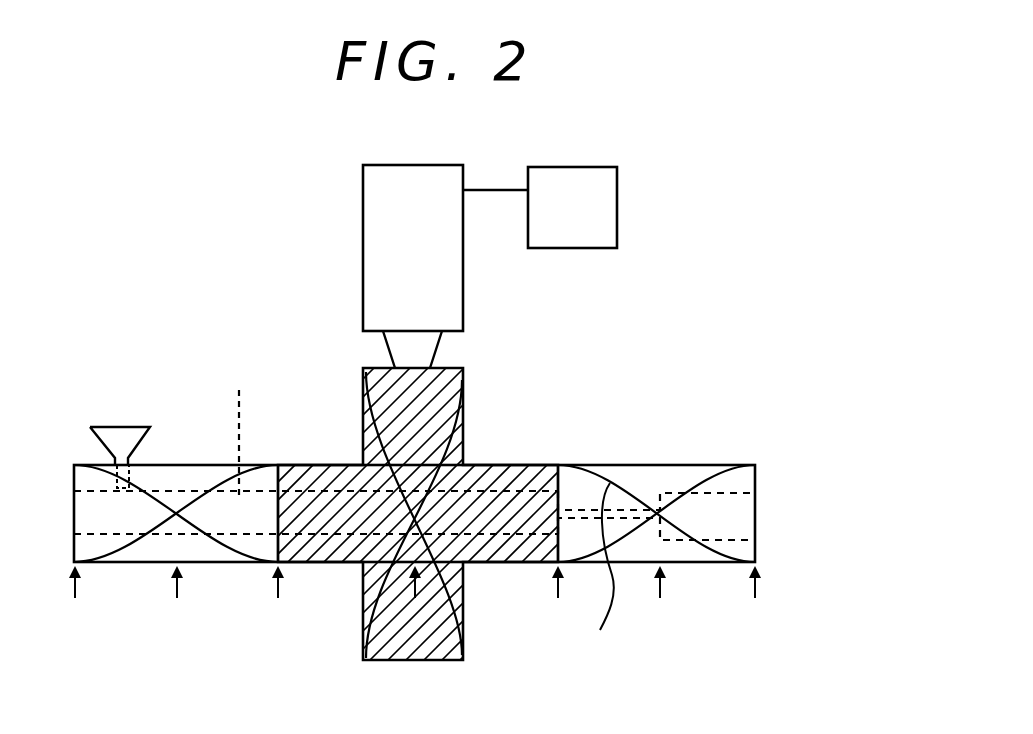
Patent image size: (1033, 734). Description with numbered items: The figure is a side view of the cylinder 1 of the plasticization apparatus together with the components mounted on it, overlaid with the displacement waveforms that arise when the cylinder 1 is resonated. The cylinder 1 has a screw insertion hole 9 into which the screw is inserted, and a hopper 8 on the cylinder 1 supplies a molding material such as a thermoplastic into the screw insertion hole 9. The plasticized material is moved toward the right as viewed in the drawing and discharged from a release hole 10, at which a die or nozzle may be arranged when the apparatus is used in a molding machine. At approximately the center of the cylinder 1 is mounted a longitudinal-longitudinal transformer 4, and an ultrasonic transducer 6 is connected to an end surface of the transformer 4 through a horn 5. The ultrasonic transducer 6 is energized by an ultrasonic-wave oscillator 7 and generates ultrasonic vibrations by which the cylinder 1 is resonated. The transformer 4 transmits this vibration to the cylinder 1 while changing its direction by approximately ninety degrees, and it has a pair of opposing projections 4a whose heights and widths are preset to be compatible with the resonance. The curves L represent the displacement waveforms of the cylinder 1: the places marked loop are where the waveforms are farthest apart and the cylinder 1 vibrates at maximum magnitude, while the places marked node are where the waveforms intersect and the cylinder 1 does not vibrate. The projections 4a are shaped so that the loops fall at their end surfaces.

The cylinder 1 is at (648, 474).
The longitudinal-longitudinal (L-L) transformer 4 is at (480, 392).
The projections 4a is at (382, 395).
The horn 5 is at (428, 348).
The ultrasonic transducer 6 is at (420, 177).
The ultrasonic-wave oscillator 7 is at (603, 213).
The hopper 8 is at (120, 427).
The screw insertion hole 9 is at (238, 428).
The release hole 10 is at (660, 483).
The curves L is at (600, 574).